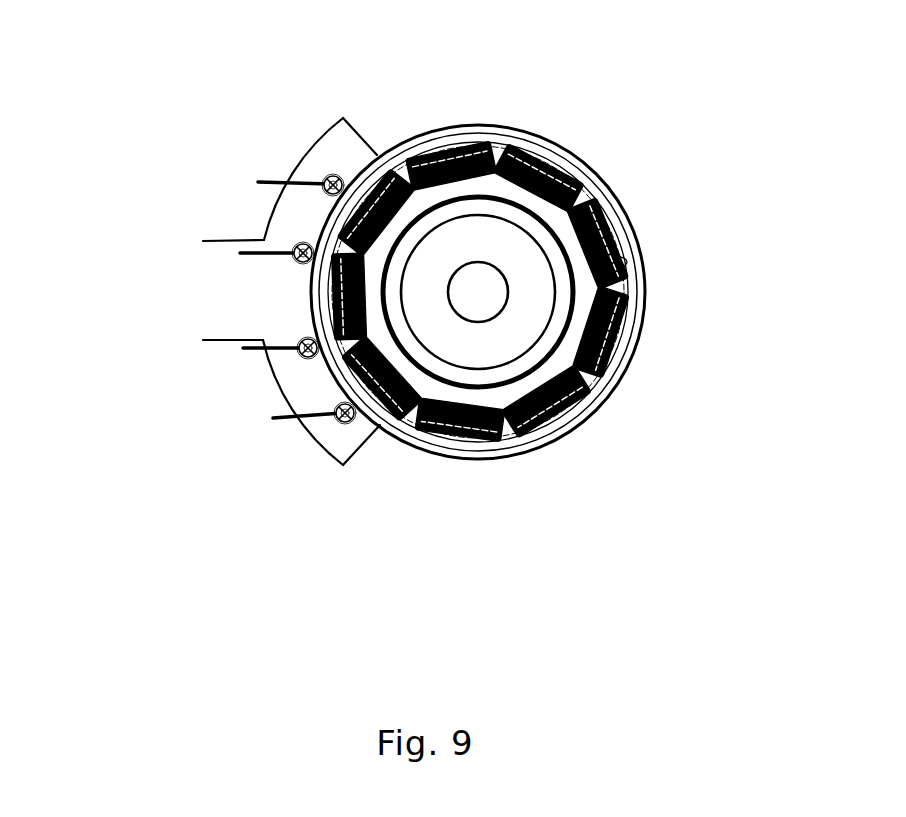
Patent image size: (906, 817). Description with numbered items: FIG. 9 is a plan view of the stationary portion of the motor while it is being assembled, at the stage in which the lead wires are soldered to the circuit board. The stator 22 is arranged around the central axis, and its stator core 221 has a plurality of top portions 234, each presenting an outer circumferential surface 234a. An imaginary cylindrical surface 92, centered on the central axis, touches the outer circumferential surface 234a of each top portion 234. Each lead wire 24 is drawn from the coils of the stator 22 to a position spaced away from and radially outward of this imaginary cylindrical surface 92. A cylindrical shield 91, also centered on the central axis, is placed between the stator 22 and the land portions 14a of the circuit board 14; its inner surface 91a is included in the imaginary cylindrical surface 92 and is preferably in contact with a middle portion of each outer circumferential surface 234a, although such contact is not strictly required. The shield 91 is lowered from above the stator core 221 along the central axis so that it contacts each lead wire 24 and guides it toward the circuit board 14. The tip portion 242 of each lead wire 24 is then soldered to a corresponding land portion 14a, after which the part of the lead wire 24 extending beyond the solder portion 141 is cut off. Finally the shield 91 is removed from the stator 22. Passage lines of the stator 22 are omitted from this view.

The circuit board 14 is at (365, 142).
The land portions 14a is at (337, 172).
The solder portion 141 is at (330, 176).
The lead wire 24 is at (187, 147).
The tip portion 242 is at (323, 180).
The stator 22 is at (702, 115).
The stator core 221 is at (603, 180).
The shield 91 is at (637, 232).
The inner surface 91a is at (627, 262).
The imaginary cylindrical surface 92 is at (628, 203).
The top portion 234 is at (517, 155).
The outer circumferential surface 234a is at (565, 170).